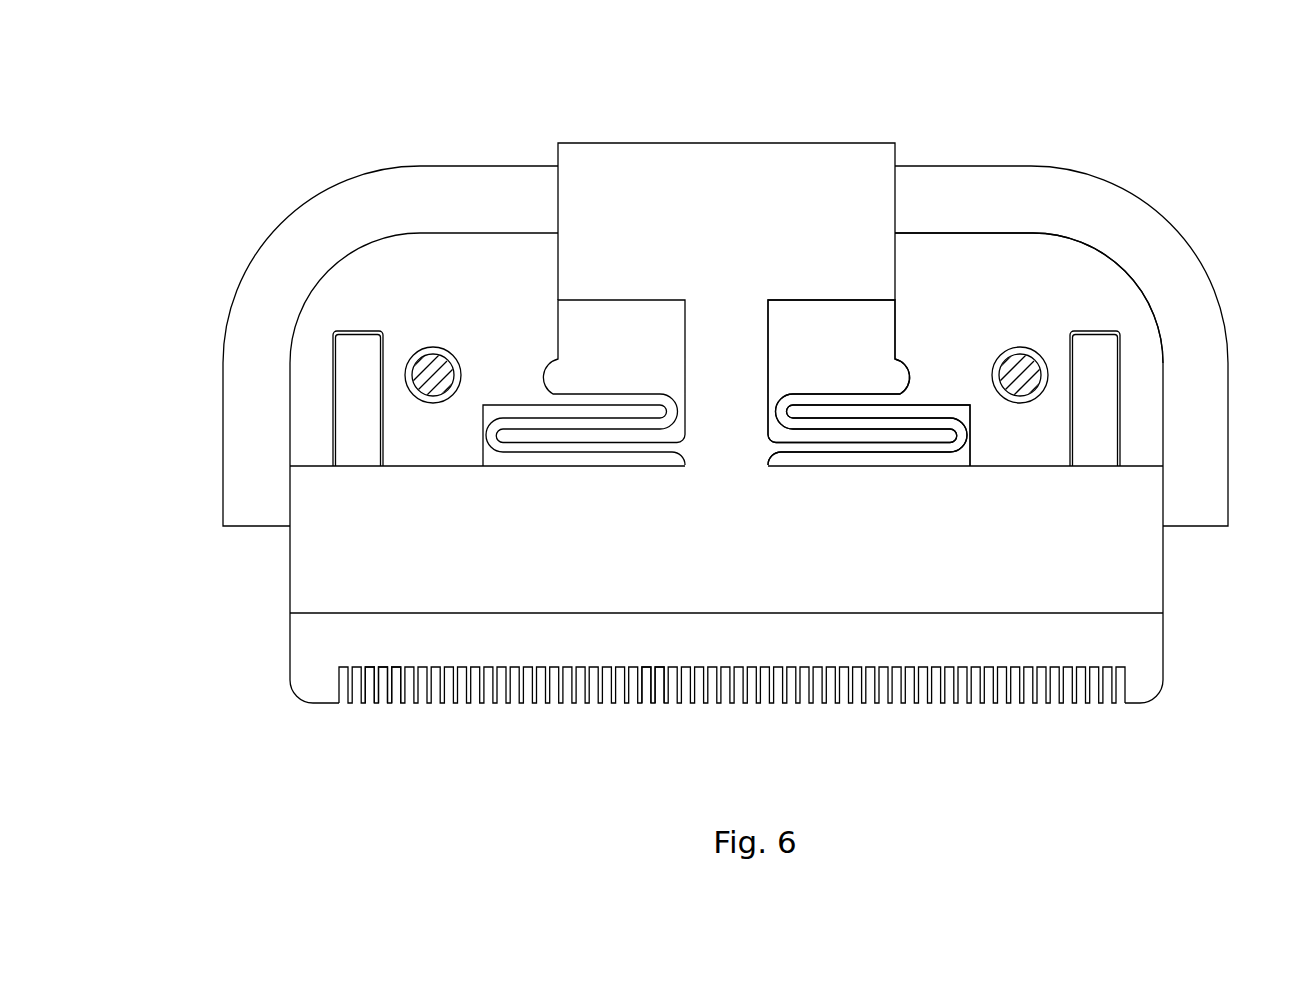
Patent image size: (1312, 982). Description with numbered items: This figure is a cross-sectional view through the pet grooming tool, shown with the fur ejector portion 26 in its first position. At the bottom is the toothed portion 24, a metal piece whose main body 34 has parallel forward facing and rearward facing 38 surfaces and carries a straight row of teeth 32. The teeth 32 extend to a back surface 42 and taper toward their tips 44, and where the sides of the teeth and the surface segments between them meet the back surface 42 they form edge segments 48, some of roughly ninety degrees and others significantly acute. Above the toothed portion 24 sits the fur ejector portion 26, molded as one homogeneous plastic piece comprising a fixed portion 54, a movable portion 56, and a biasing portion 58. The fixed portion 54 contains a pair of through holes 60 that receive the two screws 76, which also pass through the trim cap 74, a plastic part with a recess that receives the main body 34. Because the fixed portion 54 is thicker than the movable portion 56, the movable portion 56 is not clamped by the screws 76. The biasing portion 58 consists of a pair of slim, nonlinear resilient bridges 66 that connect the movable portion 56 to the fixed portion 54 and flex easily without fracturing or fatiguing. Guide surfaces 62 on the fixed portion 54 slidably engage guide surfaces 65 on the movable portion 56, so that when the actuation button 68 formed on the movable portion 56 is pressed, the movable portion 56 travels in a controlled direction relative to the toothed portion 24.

The toothed portion 24 is at (310, 637).
The fur ejector portion 26 is at (949, 247).
The teeth 32 is at (490, 698).
The main body 34 is at (873, 348).
The rearward facing surface 38 is at (873, 348).
The back surface 42 is at (1137, 635).
The tips 44 is at (652, 700).
The edge segments 48 is at (384, 682).
The fixed portion 54 is at (358, 283).
The movable portion 56 is at (400, 550).
The biasing portion 58 is at (635, 400).
The through holes 60 is at (430, 350).
The guide surfaces 62 is at (558, 257).
The guide surfaces 65 is at (556, 289).
The resilient bridges 66 is at (635, 400).
The actuation button 68 is at (729, 167).
The trim cap 74 is at (292, 267).
The screws 76 is at (420, 373).